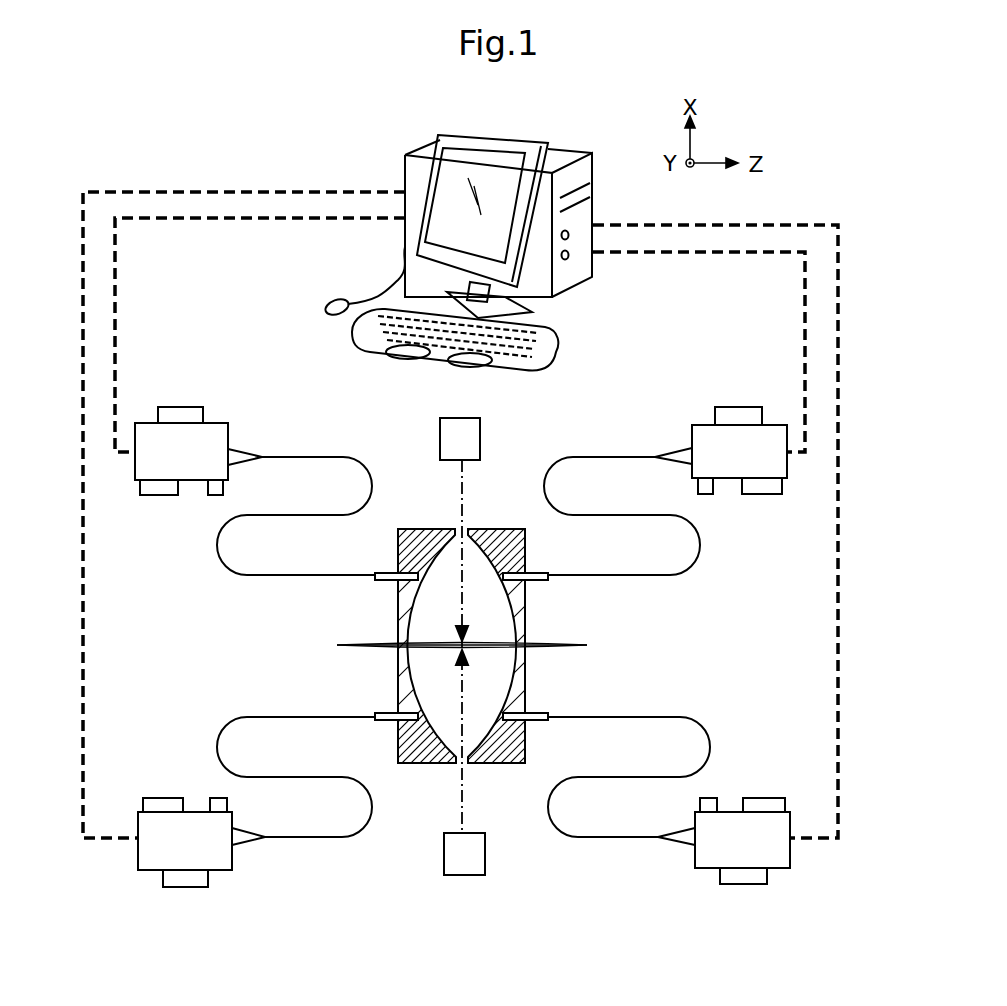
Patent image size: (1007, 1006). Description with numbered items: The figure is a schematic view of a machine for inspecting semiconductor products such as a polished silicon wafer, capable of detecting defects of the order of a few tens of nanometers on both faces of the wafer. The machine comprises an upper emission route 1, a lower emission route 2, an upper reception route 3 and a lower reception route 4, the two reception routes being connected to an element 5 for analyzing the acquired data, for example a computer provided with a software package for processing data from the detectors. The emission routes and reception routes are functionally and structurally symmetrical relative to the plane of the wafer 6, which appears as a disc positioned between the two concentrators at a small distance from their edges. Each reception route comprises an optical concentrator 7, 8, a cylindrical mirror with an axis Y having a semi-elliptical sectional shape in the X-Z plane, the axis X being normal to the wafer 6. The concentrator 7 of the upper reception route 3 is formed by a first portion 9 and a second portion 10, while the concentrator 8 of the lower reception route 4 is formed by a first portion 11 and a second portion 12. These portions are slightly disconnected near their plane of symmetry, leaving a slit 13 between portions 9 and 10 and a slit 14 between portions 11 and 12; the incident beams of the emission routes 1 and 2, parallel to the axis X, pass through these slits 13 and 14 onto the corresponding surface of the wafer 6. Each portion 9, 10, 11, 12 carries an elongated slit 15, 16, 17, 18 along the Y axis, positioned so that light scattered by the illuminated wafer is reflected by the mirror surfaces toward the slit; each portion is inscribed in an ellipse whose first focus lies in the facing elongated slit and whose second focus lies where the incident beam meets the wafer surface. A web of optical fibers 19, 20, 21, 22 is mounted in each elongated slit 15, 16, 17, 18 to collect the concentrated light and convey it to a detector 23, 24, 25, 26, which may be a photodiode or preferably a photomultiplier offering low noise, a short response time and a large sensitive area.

The upper emission route 1 is at (452, 453).
The lower emission route 2 is at (456, 868).
The upper reception route 3 is at (320, 428).
The lower reception route 4 is at (372, 875).
The element for analyzing the acquired data 5 is at (384, 132).
The wafer 6 is at (566, 647).
The optical concentrator 7 is at (489, 531).
The optical concentrator 8 is at (440, 765).
The first portion 9 is at (397, 541).
The second portion 10 is at (526, 541).
The first portion 11 is at (396, 757).
The second portion 12 is at (527, 757).
The slit 13 is at (458, 528).
The slit 14 is at (466, 762).
The elongated slit 15 is at (386, 582).
The elongated slit 16 is at (538, 582).
The elongated slit 17 is at (388, 712).
The elongated slit 18 is at (540, 712).
The web of optical fibers 19 is at (217, 544).
The web of optical fibers 20 is at (701, 545).
The web of optical fibers 21 is at (217, 749).
The web of optical fibers 22 is at (710, 749).
The detector 23 is at (166, 465).
The detector 24 is at (725, 465).
The detector 25 is at (170, 854).
The detector 26 is at (727, 854).